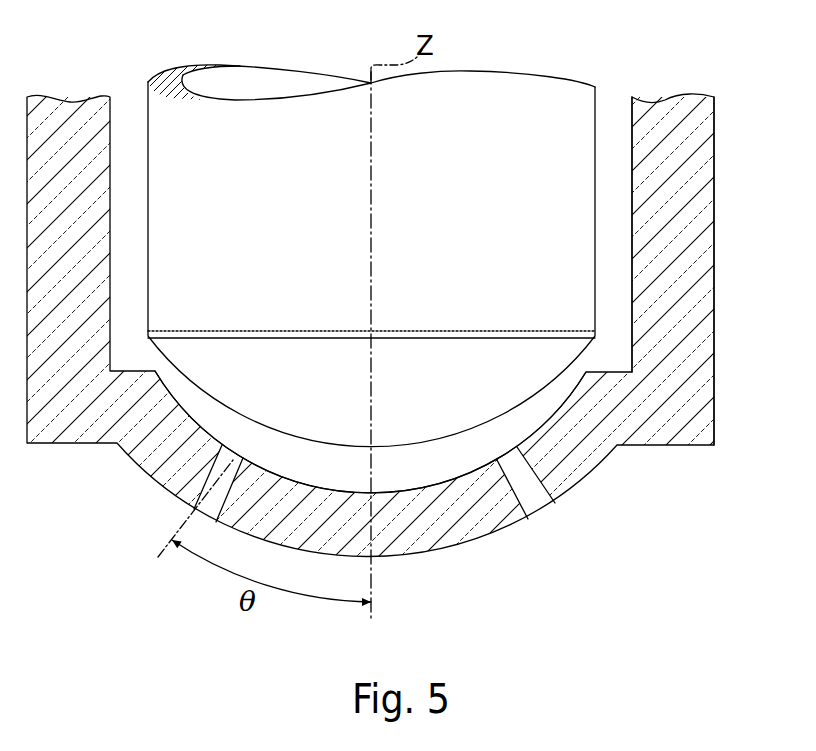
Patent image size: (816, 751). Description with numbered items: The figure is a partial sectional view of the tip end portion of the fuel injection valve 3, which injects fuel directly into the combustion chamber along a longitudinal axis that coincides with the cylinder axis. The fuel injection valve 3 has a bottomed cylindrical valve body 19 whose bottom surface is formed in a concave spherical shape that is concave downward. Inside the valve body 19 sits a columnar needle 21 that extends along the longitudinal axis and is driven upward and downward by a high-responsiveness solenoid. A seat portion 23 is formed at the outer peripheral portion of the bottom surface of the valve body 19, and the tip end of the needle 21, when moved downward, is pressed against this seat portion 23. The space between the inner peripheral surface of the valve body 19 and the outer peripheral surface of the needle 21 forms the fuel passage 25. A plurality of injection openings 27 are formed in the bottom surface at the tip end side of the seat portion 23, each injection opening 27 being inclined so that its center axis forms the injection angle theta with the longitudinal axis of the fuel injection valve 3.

The fuel injection valve 3 is at (715, 127).
The valve body 19 is at (692, 394).
The needle 21 is at (595, 215).
The seat portion 23 is at (556, 386).
The fuel passage 25 is at (618, 138).
The injection openings 27 is at (196, 490).